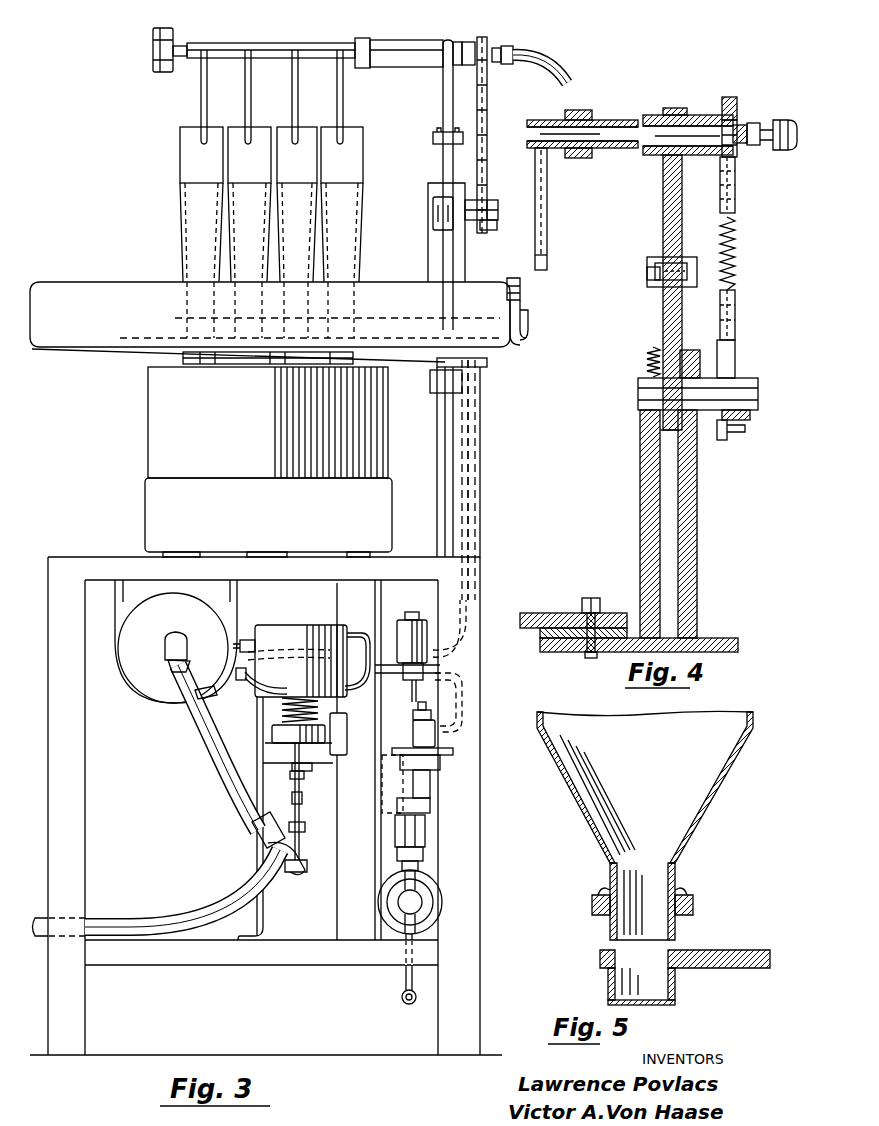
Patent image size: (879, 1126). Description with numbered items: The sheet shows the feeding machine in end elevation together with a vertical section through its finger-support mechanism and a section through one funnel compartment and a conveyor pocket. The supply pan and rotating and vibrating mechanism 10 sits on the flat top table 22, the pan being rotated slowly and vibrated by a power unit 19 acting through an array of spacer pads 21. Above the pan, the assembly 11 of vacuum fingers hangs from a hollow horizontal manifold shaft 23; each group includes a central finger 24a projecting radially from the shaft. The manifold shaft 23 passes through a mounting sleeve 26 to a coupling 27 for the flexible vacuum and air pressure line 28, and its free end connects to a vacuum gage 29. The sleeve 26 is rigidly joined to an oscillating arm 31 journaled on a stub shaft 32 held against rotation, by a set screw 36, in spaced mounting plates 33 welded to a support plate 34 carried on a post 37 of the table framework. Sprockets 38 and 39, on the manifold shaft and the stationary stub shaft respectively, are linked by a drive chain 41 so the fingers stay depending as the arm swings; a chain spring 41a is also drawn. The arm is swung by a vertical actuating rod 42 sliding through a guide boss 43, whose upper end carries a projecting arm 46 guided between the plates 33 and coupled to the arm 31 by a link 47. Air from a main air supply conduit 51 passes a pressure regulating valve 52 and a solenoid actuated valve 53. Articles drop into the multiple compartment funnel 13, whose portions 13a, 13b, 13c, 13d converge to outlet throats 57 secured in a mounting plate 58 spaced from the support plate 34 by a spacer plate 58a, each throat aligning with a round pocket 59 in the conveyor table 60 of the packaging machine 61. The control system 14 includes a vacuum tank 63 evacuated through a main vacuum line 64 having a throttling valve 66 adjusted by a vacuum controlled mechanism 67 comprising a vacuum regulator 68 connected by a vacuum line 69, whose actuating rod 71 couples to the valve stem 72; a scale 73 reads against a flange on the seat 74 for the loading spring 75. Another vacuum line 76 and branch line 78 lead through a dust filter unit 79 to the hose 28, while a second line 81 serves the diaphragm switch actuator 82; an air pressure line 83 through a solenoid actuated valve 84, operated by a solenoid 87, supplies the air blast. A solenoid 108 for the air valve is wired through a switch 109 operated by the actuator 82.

In FIG. 3, the supply pan and rotating and vibrating mechanism 10 is at (135, 356).
In FIG. 3, the assembly of vacuum fingers 11 is at (197, 90).
In FIG. 3, the multiple compartment funnel 13 is at (243, 223).
In FIG. 3, the funnel portion 13a is at (188, 205).
In FIG. 3, the funnel portion 13b is at (238, 236).
In FIG. 3, the funnel portion 13c is at (300, 224).
In FIG. 3, the funnel portion 13d is at (320, 248).
In FIG. 3, the pneumatic and electrical control system 14 is at (202, 774).
In FIG. 3, the power unit 19 is at (148, 452).
In FIG. 3, the spacer pads 21 is at (225, 366).
In FIG. 3, the table 22 is at (100, 556).
In FIG. 3, the manifold shaft 23 is at (238, 43).
In FIG. 4, the manifold shaft 23 is at (556, 148).
In FIG. 4, the central finger 24a is at (547, 242).
In FIG. 3, the mounting sleeve 26 is at (416, 40).
In FIG. 4, the mounting sleeve 26 is at (637, 115).
In FIG. 3, the coupling 27 is at (500, 48).
In FIG. 4, the coupling 27 is at (750, 123).
In FIG. 3, the vacuum and air pressure line 28 is at (562, 80).
In FIG. 4, the vacuum and air pressure line 28 is at (789, 151).
In FIG. 3, the vacuum gage 29 is at (153, 42).
In FIG. 3, the oscillating arm 31 is at (443, 103).
In FIG. 4, the oscillating arm 31 is at (663, 229).
In FIG. 3, the stub shaft 32 is at (497, 205).
In FIG. 4, the stub shaft 32 is at (638, 398).
In FIG. 3, the mounting plates 33 is at (436, 250).
In FIG. 4, the mounting plates 33 is at (641, 513).
In FIG. 3, the support plate 34 is at (489, 366).
In FIG. 4, the support plate 34 is at (732, 648).
In FIG. 4, the set screw 36 is at (647, 350).
In FIG. 3, the post 37 is at (480, 462).
In FIG. 4, the sprocket 38 is at (723, 110).
In FIG. 3, the sprocket 39 is at (495, 220).
In FIG. 4, the sprocket 39 is at (740, 428).
In FIG. 3, the drive chain 41 is at (488, 105).
In FIG. 4, the drive chain 41 is at (737, 347).
In FIG. 4, the chain spring 41a is at (736, 266).
In FIG. 3, the actuating rod 42 is at (437, 478).
In FIG. 3, the guide boss 43 is at (432, 390).
In FIG. 3, the laterally projecting arm 46 is at (433, 210).
In FIG. 3, the link 47 is at (440, 158).
In FIG. 4, the link 47 is at (652, 292).
In FIG. 3, the main air supply conduit 51 is at (406, 985).
In FIG. 3, the pressure regulating valve 52 is at (444, 909).
In FIG. 3, the solenoid actuated valve 53 is at (423, 856).
In FIG. 3, the outlet throat 57 is at (180, 320).
In FIG. 3, the mounting plate 58 is at (160, 338).
In FIG. 4, the mounting plate 58 is at (569, 613).
In FIG. 5, the mounting plate 58 is at (694, 906).
In FIG. 4, the height adjusting spacer plate 58a is at (540, 642).
In FIG. 5, the pocket 59 is at (668, 951).
In FIG. 5, the conveyor table 60 is at (712, 968).
In FIG. 5, the packaging machine 61 is at (736, 950).
In FIG. 3, the vacuum tank 63 is at (128, 680).
In FIG. 3, the main vacuum line 64 is at (248, 852).
In FIG. 3, the throttling valve 66 is at (312, 873).
In FIG. 3, the vacuum controlled mechanism 67 is at (248, 720).
In FIG. 3, the vacuum regulator 68 is at (308, 634).
In FIG. 3, the vacuum line 69 is at (364, 688).
In FIG. 3, the actuating rod 71 is at (294, 782).
In FIG. 3, the valve stem 72 is at (260, 840).
In FIG. 3, the scale 73 is at (347, 755).
In FIG. 3, the seat 74 is at (285, 736).
In FIG. 3, the regulator loading spring 75 is at (280, 710).
In FIG. 3, the vacuum line 76 is at (246, 640).
In FIG. 3, the branch line 78 is at (470, 536).
In FIG. 3, the dust filter unit 79 is at (524, 342).
In FIG. 3, the second line 81 is at (462, 716).
In FIG. 3, the switch actuator 82 is at (436, 770).
In FIG. 3, the air pressure line 83 is at (418, 688).
In FIG. 3, the solenoid actuated valve 84 is at (430, 668).
In FIG. 3, the solenoid 87 is at (406, 626).
In FIG. 3, the solenoid 108 is at (425, 833).
In FIG. 3, the switch 109 is at (430, 808).